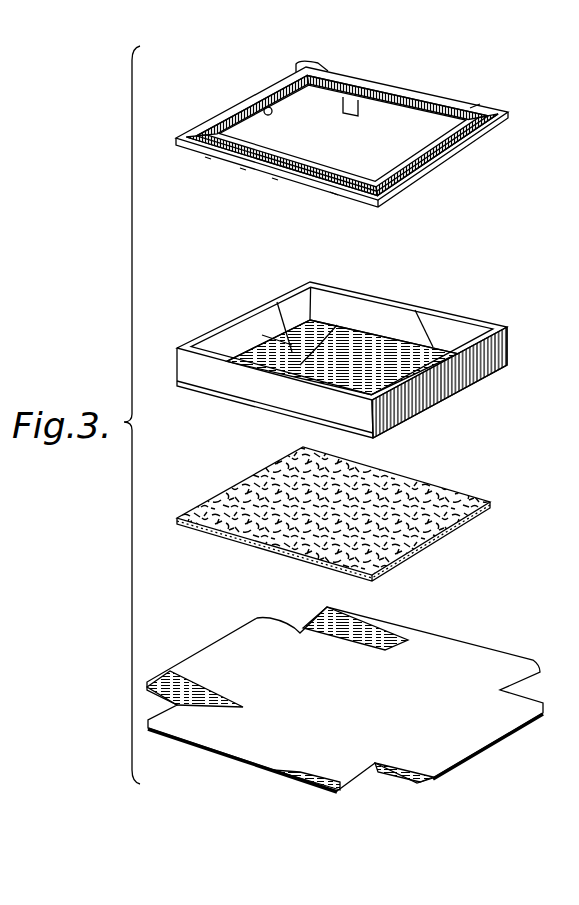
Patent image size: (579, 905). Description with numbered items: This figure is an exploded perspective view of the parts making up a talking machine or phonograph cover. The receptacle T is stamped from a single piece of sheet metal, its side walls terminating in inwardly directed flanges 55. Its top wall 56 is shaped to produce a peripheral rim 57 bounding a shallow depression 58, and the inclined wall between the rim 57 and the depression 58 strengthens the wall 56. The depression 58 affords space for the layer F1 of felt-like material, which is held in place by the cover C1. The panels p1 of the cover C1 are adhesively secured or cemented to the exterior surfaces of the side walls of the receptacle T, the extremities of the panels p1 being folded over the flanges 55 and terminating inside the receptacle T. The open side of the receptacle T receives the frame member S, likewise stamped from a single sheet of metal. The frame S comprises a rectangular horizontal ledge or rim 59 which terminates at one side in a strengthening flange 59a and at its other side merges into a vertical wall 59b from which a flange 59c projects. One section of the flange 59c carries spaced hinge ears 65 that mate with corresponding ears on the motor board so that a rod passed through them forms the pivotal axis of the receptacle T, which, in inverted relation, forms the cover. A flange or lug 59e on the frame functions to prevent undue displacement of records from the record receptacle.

The frame member S is at (359, 133).
The ledge or rim 59 is at (280, 127).
The strengthening flange 59a is at (268, 108).
The vertical wall 59b is at (330, 76).
The flange 59c is at (505, 125).
The flange or lug 59e is at (355, 112).
The hinge ears 65 is at (357, 197).
The receptacle T is at (357, 360).
The inwardly directed flanges 55 is at (400, 380).
The top wall 56 is at (287, 350).
The peripheral rim 57 is at (430, 347).
The shallow depression 58 is at (294, 338).
The layer of felt-like material F1 is at (450, 490).
The cover C1 is at (345, 700).
The panels p1 is at (226, 640).